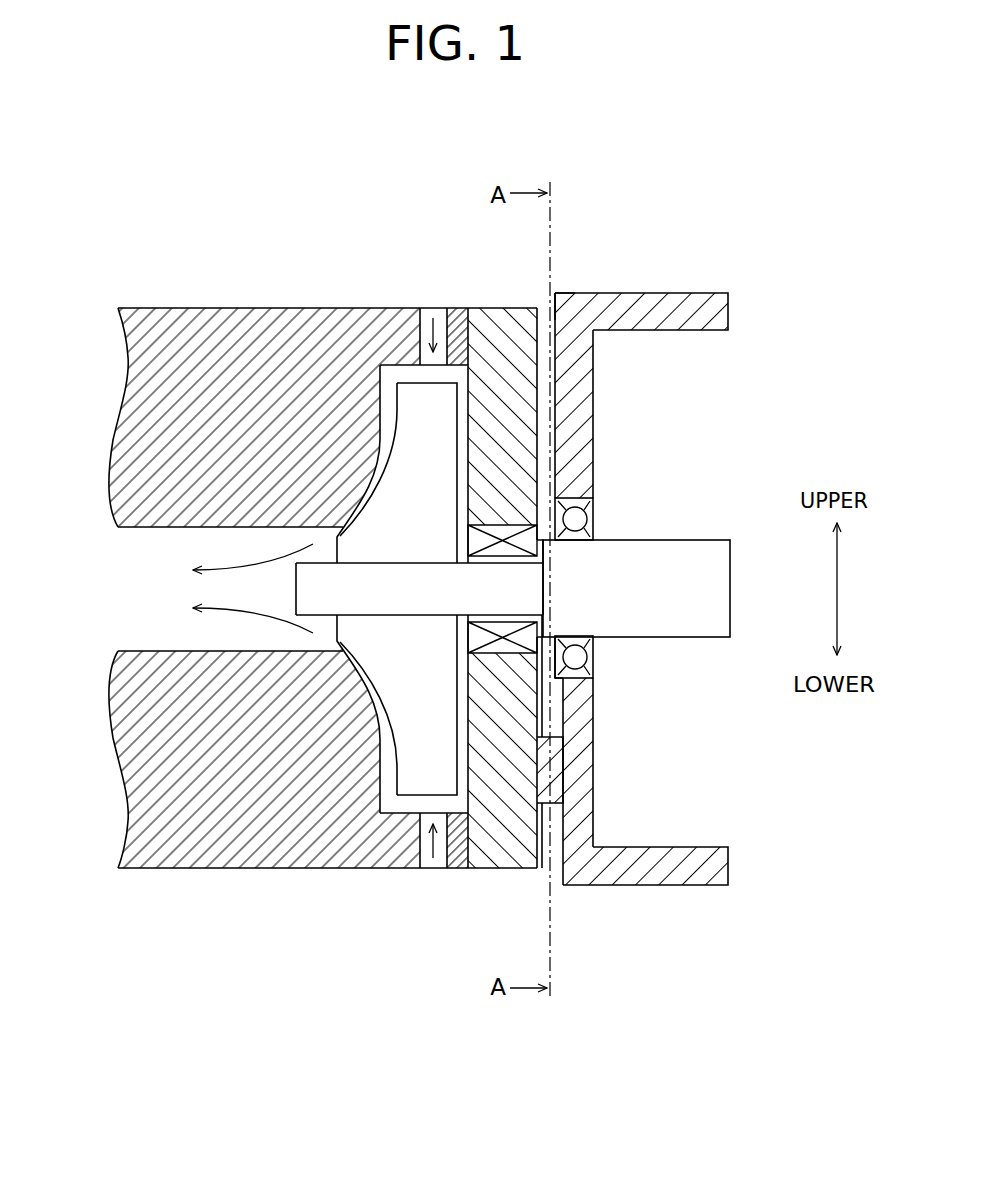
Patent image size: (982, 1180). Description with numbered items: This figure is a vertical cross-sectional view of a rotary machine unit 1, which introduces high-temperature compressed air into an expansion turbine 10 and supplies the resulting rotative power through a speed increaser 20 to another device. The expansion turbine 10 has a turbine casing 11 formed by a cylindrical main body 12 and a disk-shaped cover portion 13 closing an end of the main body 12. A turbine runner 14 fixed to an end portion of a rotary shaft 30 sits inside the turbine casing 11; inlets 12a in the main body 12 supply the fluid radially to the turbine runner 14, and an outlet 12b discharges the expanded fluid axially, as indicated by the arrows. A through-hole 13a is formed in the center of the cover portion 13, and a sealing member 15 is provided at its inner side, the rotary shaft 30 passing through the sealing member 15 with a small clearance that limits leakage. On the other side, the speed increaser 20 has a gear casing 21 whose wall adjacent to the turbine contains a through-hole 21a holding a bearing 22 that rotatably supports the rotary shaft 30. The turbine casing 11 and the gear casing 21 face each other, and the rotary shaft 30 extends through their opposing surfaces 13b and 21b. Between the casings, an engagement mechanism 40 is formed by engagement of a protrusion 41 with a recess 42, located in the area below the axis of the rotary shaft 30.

The rotary machine unit 1 is at (760, 260).
The expansion turbine 10 is at (207, 302).
The turbine casing 11 is at (498, 222).
The main body 12 is at (387, 335).
The inlets 12a is at (420, 338).
The outlet 12b is at (160, 600).
The cover portion 13 is at (503, 322).
The through-hole 13a is at (544, 606).
The opposing surface 13b is at (542, 347).
The turbine runner 14 is at (407, 763).
The sealing member 15 is at (507, 530).
The speed increaser 20 is at (677, 287).
The gear casing 21 is at (620, 310).
The through-hole 21a is at (594, 666).
The opposing surface 21b is at (556, 290).
The bearing 22 is at (588, 510).
The rotary shaft 30 is at (706, 556).
The engagement mechanism 40 is at (686, 762).
The protrusion 41 is at (556, 770).
The recess 42 is at (560, 830).